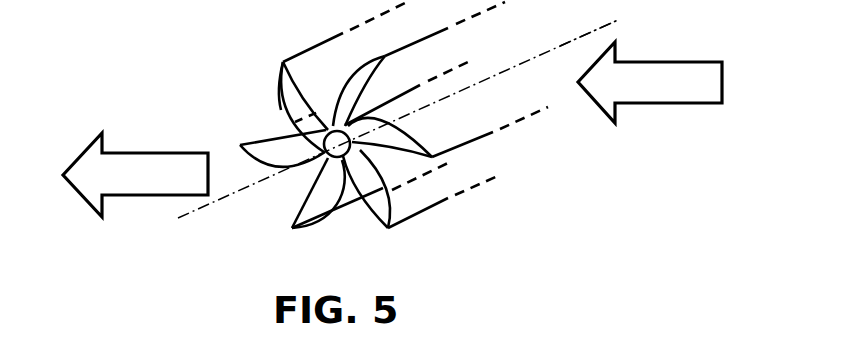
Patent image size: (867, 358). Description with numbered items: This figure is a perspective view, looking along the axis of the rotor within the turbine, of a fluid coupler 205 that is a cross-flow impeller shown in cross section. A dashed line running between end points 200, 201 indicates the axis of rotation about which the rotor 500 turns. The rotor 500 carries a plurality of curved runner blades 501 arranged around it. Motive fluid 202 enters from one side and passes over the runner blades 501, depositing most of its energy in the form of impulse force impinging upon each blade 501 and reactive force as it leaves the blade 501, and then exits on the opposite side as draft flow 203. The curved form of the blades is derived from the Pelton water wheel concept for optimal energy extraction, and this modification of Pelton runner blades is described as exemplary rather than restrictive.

The axis of rotation end point 200 is at (607, 24).
The axis of rotation end point 201 is at (381, 130).
The motive fluid 202 is at (635, 91).
The draft flow 203 is at (125, 184).
The fluid coupler 205 is at (270, 118).
The rotor 500 is at (292, 229).
The runner blade 501 is at (281, 77).